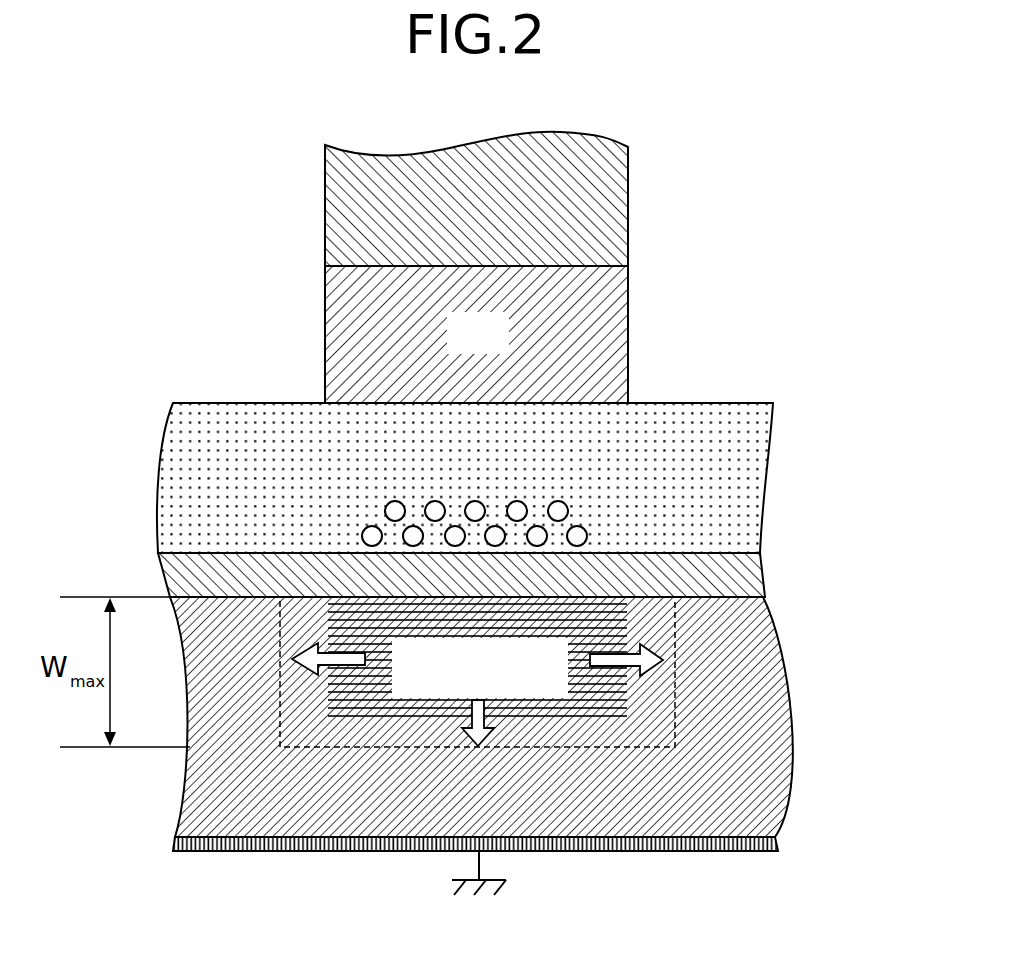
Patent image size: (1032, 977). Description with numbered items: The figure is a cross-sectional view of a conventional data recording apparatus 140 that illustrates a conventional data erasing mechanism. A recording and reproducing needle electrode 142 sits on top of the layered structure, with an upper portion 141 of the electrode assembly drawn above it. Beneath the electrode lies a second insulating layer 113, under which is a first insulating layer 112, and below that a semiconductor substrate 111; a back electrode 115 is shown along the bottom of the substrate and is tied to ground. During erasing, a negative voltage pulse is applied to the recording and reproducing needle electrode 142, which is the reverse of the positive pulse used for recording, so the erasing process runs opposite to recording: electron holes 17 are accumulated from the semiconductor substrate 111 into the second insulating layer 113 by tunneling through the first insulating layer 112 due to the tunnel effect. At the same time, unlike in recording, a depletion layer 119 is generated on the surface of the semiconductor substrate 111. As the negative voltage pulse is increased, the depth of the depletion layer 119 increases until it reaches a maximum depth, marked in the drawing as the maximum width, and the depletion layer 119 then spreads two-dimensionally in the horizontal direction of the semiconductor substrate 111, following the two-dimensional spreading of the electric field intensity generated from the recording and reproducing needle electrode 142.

The semiconductor device / transistor structure 140 is at (816, 115).
The gate electrode upper portion 141 is at (340, 200).
The recording and reproducing needle electrode 142 is at (340, 343).
The charges / trapped carriers 17 is at (558, 510).
The second insulating layer 113 is at (745, 490).
The first insulating layer 112 is at (748, 575).
The semiconductor substrate 111 is at (533, 754).
The depletion layer 119 is at (378, 700).
The back electrode 115 is at (778, 847).